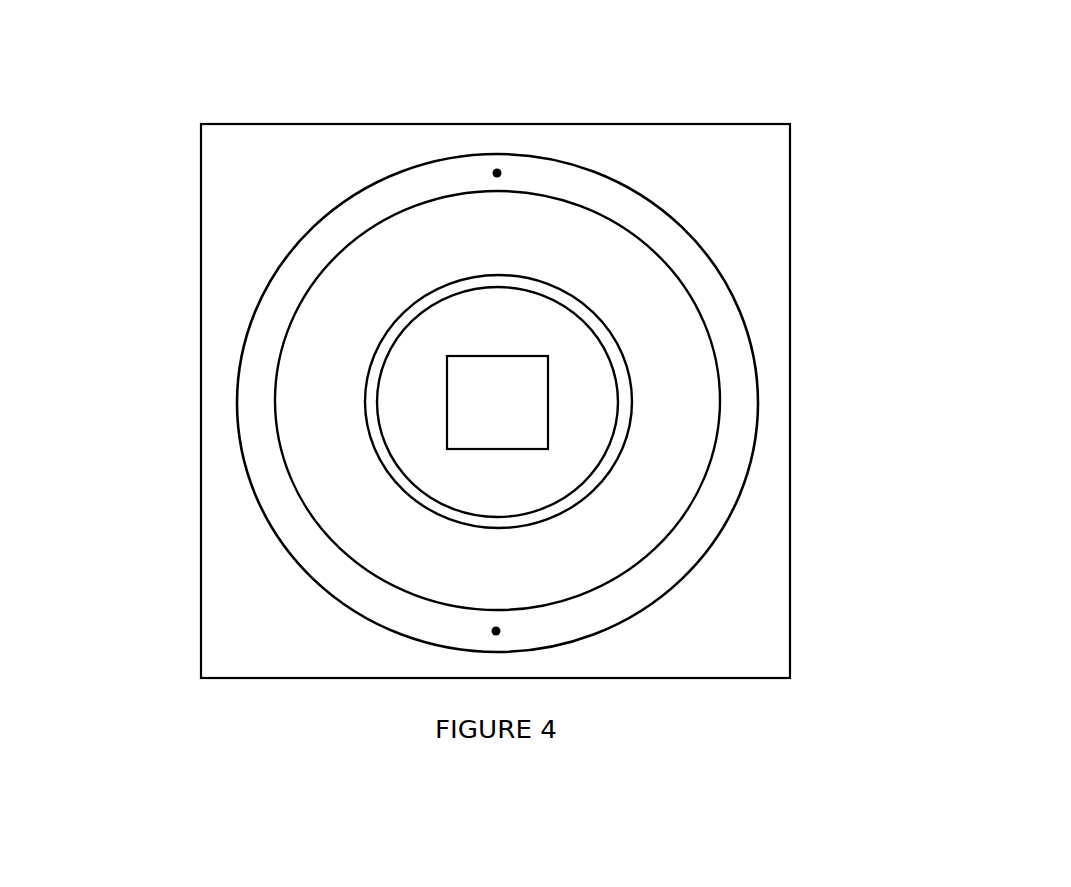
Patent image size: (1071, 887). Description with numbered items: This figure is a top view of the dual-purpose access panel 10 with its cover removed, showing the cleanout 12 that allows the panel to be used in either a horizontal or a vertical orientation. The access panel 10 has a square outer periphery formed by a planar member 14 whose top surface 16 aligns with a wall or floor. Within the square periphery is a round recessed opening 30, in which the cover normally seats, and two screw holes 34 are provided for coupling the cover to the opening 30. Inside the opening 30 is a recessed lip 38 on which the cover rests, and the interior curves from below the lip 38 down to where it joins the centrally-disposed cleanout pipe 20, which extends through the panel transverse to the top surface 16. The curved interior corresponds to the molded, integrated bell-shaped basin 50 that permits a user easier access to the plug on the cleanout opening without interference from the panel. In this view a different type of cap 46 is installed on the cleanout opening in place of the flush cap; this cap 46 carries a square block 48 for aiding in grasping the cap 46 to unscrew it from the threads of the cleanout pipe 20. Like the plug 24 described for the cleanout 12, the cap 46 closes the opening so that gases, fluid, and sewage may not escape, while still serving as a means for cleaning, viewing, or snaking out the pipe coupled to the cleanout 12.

The access panel 10 is at (833, 172).
The cleanout 12 is at (597, 470).
The planar member 14 is at (743, 567).
The top surface 16 is at (780, 413).
The cleanout pipe 20 is at (552, 518).
The plug 24 is at (423, 418).
The recessed opening 30 is at (733, 295).
The screw holes 34 is at (497, 162).
The recessed lip 38 is at (625, 207).
The cap 46 is at (415, 462).
The block 48 is at (492, 384).
The molded, integrated basin 50 is at (410, 262).